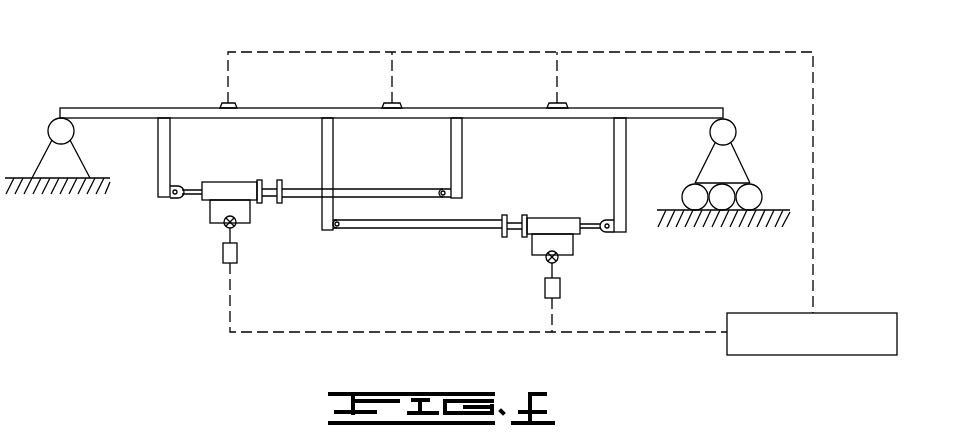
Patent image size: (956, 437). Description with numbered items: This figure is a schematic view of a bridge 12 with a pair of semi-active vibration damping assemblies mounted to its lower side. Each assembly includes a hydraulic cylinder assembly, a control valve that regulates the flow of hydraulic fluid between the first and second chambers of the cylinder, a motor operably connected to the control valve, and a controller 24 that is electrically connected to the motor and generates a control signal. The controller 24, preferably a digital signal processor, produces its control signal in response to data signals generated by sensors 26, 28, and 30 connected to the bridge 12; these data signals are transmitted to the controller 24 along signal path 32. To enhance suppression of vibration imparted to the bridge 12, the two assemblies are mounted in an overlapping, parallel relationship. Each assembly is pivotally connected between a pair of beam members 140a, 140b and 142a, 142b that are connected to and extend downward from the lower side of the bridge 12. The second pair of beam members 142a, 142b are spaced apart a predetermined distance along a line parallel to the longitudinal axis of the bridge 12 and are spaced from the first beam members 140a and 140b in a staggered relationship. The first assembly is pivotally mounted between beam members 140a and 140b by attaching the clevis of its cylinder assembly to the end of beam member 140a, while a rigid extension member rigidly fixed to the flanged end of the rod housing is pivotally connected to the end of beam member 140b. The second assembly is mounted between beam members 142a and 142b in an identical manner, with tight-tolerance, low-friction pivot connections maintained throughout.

The bridge 12 is at (113, 106).
The controller 24 is at (779, 355).
The sensor 26 is at (227, 103).
The sensor 28 is at (383, 104).
The sensor 30 is at (550, 104).
The signal path 32 is at (675, 52).
The beam member 140a is at (158, 165).
The beam member 140b is at (463, 140).
The beam member 142a is at (613, 167).
The beam member 142b is at (320, 142).